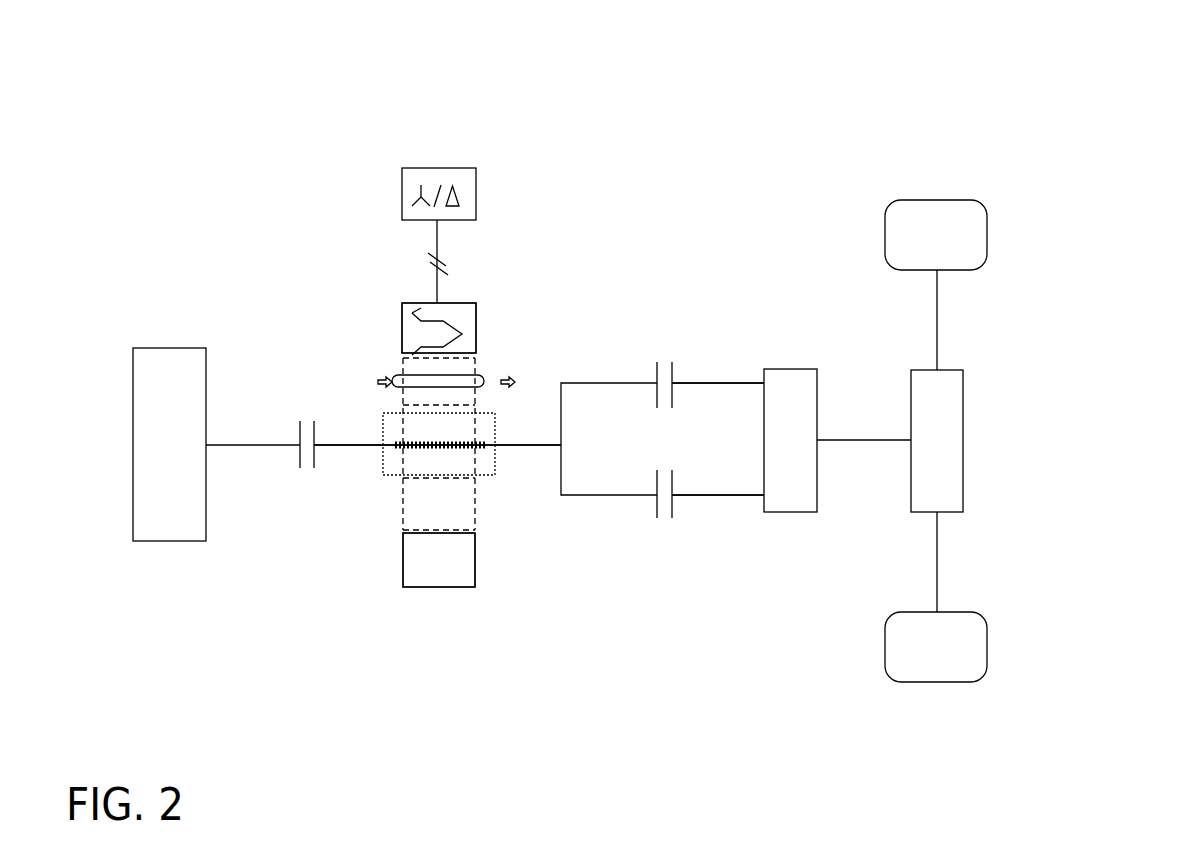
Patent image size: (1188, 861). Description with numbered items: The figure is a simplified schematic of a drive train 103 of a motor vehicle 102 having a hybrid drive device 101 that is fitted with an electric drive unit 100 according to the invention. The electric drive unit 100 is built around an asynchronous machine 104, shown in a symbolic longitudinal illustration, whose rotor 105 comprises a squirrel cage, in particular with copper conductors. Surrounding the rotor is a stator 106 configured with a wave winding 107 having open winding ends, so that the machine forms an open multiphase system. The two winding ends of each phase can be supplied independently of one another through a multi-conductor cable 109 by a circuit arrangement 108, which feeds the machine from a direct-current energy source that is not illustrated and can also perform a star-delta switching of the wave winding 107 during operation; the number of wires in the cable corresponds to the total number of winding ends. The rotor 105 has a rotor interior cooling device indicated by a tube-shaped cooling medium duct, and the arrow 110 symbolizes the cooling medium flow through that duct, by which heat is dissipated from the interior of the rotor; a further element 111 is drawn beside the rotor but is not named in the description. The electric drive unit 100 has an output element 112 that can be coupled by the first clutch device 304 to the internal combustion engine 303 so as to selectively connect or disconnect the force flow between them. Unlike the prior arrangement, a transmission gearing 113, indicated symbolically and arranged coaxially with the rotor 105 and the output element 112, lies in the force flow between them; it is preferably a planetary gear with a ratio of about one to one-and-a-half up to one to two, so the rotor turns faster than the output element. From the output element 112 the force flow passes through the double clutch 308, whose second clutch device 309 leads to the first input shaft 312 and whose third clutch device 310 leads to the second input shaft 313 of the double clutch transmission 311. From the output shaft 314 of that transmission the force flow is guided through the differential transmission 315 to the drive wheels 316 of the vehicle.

The electric drive unit 100 is at (298, 198).
The hybrid drive device 101 is at (245, 612).
The motor vehicle 102 is at (1047, 292).
The drive train 103 is at (816, 130).
The asynchronous machine 104 is at (463, 586).
The rotor 105 is at (461, 374).
The stator 106 is at (413, 303).
The wave winding 107 is at (443, 323).
The circuit arrangement 108 is at (444, 168).
The multi-conductor cable 109 is at (443, 258).
The arrow 110 is at (429, 380).
The axial displacement direction 111 is at (374, 382).
The output element 112 is at (340, 445).
The transmission gearing 113 is at (393, 432).
The internal combustion engine 303 is at (172, 362).
The first clutch device 304 is at (300, 460).
The double clutch 308 is at (677, 280).
The second clutch device 309 is at (657, 373).
The third clutch device 310 is at (657, 505).
The double clutch transmission 311 is at (791, 369).
The first input shaft 312 is at (716, 383).
The second input shaft 313 is at (709, 495).
The output shaft 314 is at (855, 440).
The differential transmission 315 is at (963, 440).
The drive wheels 316 is at (957, 200).